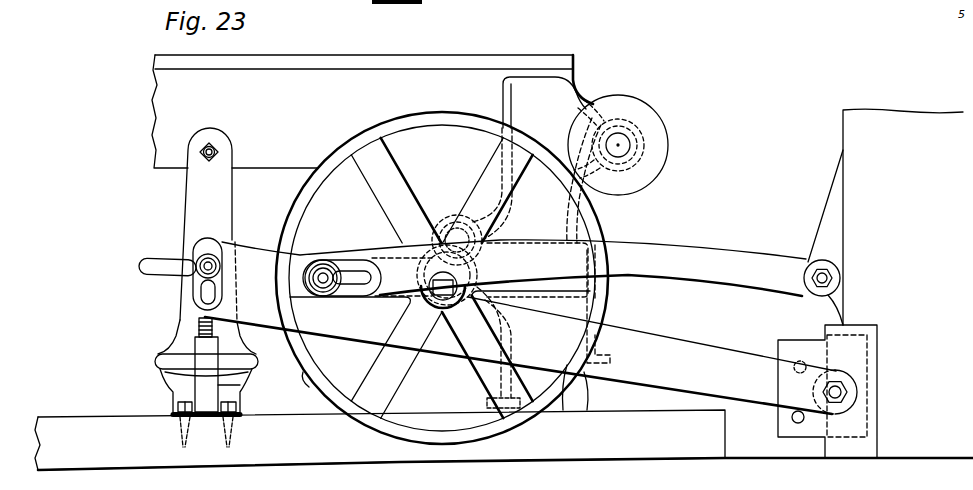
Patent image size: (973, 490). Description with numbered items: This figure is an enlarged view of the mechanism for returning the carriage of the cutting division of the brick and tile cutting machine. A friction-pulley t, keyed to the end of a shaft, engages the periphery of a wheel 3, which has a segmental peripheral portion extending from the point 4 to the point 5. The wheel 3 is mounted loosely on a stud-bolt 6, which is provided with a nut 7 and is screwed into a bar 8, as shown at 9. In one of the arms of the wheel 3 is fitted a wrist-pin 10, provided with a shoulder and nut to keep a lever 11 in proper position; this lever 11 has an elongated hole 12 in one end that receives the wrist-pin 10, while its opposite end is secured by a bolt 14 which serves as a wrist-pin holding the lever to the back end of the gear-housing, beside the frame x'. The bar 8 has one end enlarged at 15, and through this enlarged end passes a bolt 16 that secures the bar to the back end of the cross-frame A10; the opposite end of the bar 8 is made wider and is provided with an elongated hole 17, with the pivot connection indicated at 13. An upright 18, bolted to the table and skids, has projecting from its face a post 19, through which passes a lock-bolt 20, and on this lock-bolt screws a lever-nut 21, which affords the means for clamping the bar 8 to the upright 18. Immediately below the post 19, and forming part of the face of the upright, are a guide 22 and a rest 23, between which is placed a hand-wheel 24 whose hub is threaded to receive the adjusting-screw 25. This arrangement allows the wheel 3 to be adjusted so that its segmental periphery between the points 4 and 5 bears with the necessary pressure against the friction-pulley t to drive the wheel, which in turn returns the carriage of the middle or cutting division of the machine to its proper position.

The wheel 3 is at (408, 180).
The point 4 is at (598, 323).
The point 5 is at (306, 384).
The stud-bolt 6 is at (428, 292).
The nut 7 is at (397, 307).
The bar 8 is at (690, 347).
The screw connection 9 is at (432, 243).
The wrist-pin 10 is at (328, 268).
The lever 11 is at (527, 243).
The elongated hole 12 is at (348, 275).
The long bar with pivot 13 is at (803, 268).
The bolt 14 is at (829, 280).
The enlarged end 15 is at (858, 390).
The bolt 16 is at (848, 397).
The elongated hole 17 is at (197, 290).
The upright 18 is at (208, 225).
The post 19 is at (218, 280).
The lock-bolt 20 is at (221, 266).
The lever-nut 21 is at (155, 263).
The guide 22 is at (173, 345).
The rest 23 is at (240, 388).
The hand-wheel 24 is at (250, 357).
The adjusting-screw 25 is at (198, 322).
The friction-pulley t is at (618, 145).
The cross-frame A10 is at (878, 356).
The frame x' is at (903, 217).